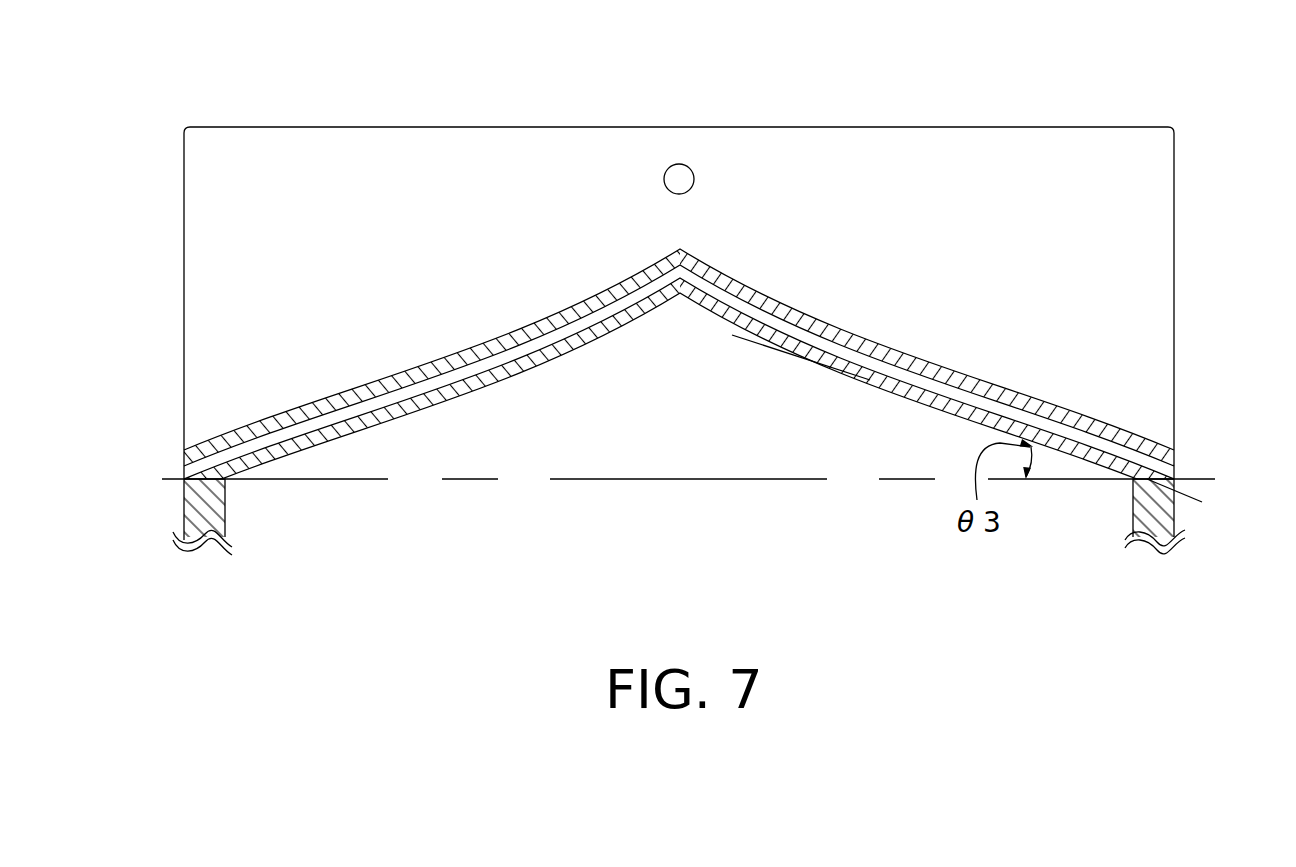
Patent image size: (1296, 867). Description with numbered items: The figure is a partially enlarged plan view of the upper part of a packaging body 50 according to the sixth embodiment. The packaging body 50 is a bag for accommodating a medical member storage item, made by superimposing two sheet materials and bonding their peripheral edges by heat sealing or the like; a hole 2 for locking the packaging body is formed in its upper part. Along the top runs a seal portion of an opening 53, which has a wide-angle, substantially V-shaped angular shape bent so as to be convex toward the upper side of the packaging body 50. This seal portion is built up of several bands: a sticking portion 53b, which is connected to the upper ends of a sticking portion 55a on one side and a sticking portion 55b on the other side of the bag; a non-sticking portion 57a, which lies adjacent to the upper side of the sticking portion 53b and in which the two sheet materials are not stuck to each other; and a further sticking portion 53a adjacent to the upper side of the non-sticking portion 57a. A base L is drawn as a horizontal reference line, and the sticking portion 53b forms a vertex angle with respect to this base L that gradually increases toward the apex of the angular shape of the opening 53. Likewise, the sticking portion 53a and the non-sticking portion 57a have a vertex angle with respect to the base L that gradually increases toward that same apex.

The hole 2 is at (680, 177).
The packaging body 50 is at (1195, 150).
The seal portion of an opening 53 is at (693, 340).
The sticking portion 53a is at (992, 393).
The sticking portion 53b is at (762, 333).
The non-sticking portion 57a is at (872, 368).
The sticking portion 55a is at (200, 517).
The sticking portion 55b is at (1155, 507).
The base L is at (702, 482).